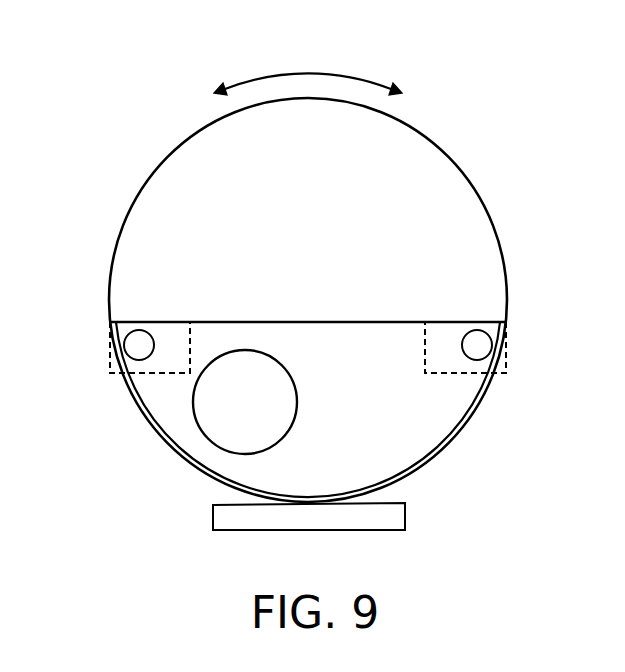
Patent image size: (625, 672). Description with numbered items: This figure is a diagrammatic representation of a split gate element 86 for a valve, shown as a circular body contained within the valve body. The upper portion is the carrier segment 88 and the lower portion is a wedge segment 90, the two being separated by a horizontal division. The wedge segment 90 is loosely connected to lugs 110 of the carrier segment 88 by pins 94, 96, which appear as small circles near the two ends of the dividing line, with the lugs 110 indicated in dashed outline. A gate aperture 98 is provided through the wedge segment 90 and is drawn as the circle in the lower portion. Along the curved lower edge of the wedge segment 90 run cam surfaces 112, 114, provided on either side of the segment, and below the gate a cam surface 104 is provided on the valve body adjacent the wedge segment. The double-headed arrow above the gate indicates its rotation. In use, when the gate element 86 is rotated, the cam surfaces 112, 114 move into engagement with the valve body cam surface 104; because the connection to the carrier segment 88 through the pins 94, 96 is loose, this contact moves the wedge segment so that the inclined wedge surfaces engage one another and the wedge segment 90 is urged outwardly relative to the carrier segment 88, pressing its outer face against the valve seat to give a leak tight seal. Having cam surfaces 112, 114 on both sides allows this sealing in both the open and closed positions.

The split gate element 86 is at (448, 84).
The carrier segment 88 is at (294, 226).
The wedge segment 90 is at (373, 421).
The pin 94 is at (143, 342).
The pin 96 is at (473, 342).
The gate aperture 98 is at (232, 417).
The valve body cam surface 104 is at (400, 489).
The lug 110 is at (110, 325).
The cam surface 112 is at (143, 432).
The cam surface 114 is at (473, 433).